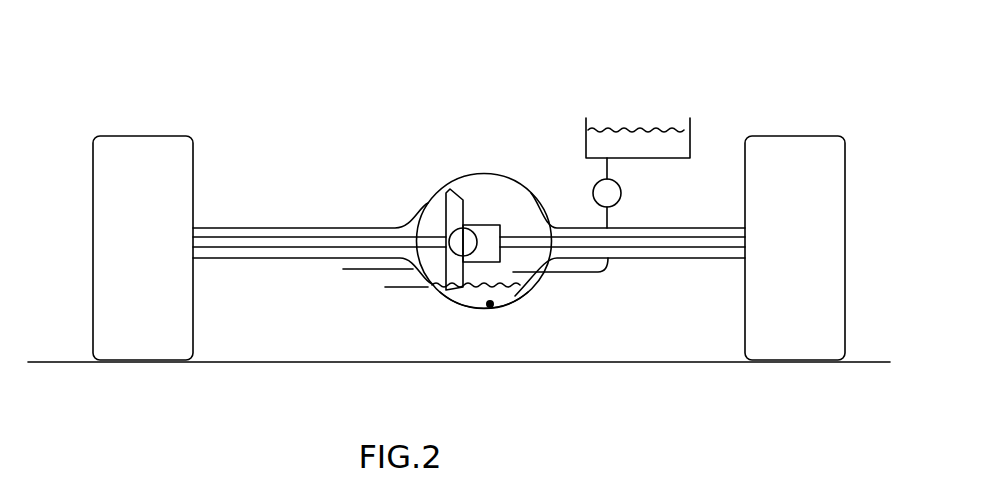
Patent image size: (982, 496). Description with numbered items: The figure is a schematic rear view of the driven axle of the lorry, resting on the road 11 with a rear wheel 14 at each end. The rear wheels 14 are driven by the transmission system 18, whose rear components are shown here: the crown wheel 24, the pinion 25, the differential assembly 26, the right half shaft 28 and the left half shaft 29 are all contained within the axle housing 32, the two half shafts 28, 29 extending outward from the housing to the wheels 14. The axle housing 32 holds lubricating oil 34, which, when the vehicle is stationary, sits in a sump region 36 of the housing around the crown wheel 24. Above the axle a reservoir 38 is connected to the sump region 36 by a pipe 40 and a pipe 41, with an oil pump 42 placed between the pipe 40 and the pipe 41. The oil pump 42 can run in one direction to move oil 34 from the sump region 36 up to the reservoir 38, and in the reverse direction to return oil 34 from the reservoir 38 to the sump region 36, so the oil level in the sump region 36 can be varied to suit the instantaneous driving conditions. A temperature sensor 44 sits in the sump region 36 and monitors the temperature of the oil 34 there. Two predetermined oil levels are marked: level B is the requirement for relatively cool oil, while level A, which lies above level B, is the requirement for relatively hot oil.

The road 11 is at (235, 409).
The rear wheels 14 is at (123, 264).
The transmission system 18 is at (423, 183).
The crown wheel 24 is at (447, 199).
The pinion 25 is at (471, 230).
The differential assembly 26 is at (485, 232).
The right half shaft 28 is at (685, 243).
The left half shaft 29 is at (262, 243).
The axle housing 32 is at (472, 173).
The oil 34 is at (475, 310).
The sump region 36 is at (453, 290).
The reservoir 38 is at (690, 141).
The pipe 40 is at (603, 170).
The pipe 41 is at (570, 272).
The oil pump 42 is at (621, 193).
The temperature sensor 44 is at (491, 306).
The level A is at (367, 271).
The level B is at (395, 289).